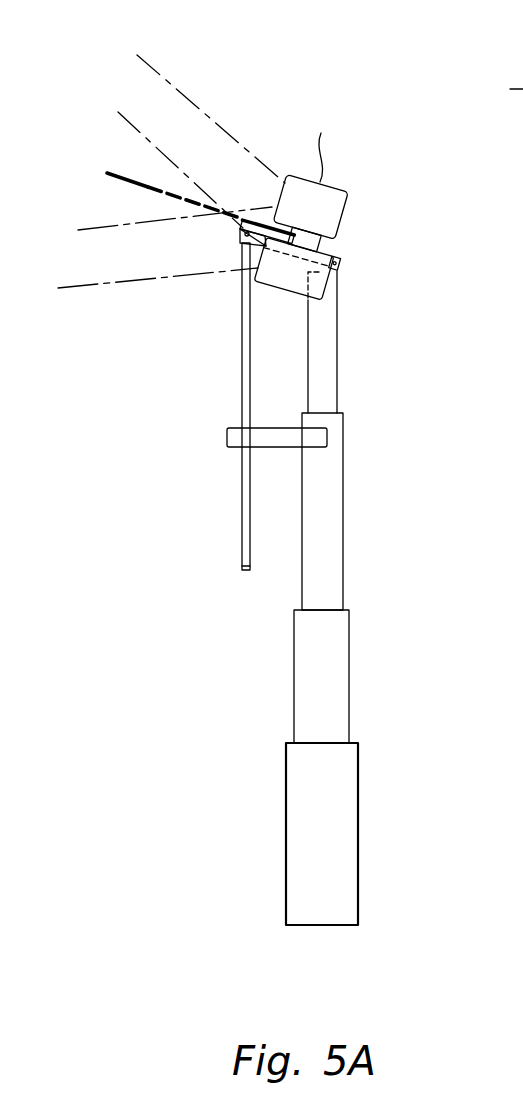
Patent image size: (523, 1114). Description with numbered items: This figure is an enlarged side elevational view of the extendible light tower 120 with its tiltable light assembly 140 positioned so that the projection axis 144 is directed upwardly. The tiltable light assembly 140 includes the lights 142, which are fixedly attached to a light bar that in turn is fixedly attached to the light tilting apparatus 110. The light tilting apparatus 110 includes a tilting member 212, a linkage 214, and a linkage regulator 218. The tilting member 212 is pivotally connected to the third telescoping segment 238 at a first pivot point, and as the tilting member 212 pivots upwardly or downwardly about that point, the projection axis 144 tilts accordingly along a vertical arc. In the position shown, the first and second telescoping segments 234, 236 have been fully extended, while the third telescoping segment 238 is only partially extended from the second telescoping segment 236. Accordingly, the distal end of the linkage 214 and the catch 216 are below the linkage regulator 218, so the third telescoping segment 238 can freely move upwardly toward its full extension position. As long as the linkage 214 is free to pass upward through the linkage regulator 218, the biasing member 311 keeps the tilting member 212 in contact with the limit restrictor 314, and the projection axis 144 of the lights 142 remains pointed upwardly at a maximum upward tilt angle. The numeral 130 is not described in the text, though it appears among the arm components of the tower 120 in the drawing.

The light tilting apparatus 110 is at (357, 208).
The extendible light tower 120 is at (386, 742).
The arm assembly 130 is at (382, 440).
The tiltable light assembly 140 is at (369, 182).
The lights 142 is at (323, 145).
The projection axis 144 is at (130, 177).
The tilting member 212 is at (240, 230).
The linkage 214 is at (241, 349).
The catch 216 is at (243, 568).
The linkage regulator 218 is at (227, 437).
The first telescoping segment 234 is at (353, 680).
The second telescoping segment 236 is at (344, 505).
The third telescoping segment 238 is at (338, 372).
The biasing member 311 is at (320, 272).
The limit restrictor 314 is at (340, 262).